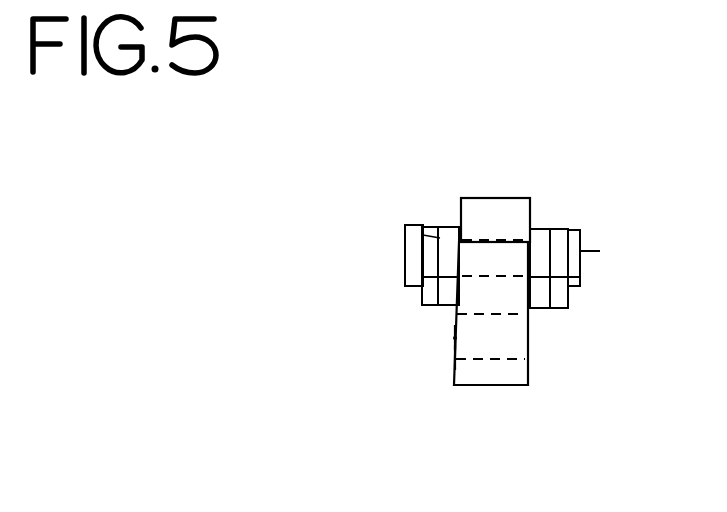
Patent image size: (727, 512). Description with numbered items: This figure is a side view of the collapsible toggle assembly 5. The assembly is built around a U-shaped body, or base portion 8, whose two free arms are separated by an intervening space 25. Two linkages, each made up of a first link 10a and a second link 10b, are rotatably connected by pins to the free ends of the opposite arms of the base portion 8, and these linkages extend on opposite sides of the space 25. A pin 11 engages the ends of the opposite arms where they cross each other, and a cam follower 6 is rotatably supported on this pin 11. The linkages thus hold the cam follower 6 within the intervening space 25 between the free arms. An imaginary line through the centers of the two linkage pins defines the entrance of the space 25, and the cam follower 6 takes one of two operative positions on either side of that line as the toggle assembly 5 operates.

The collapsible toggle assembly 5 is at (504, 395).
The cam follower 6 is at (507, 198).
The base portion 8 is at (446, 357).
The first link 10a is at (562, 300).
The second link 10b is at (537, 293).
The pin 11 is at (600, 251).
The intervening space 25 is at (455, 338).